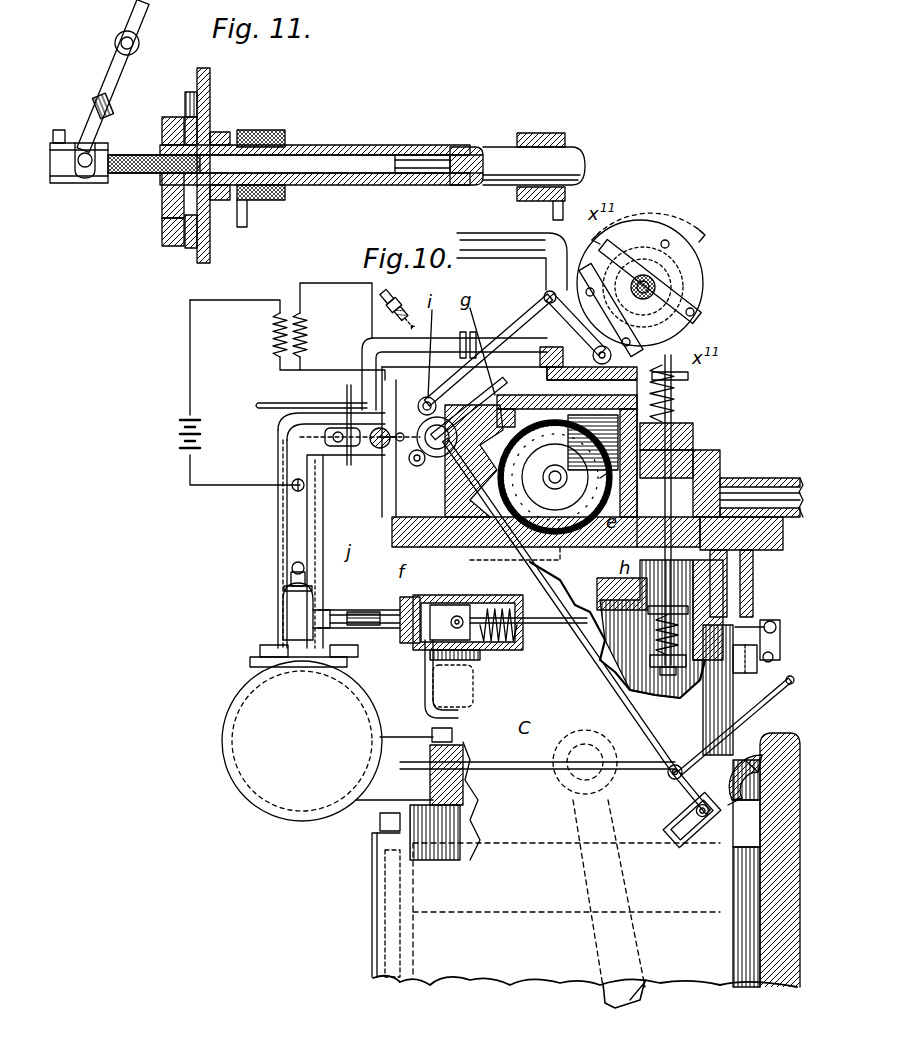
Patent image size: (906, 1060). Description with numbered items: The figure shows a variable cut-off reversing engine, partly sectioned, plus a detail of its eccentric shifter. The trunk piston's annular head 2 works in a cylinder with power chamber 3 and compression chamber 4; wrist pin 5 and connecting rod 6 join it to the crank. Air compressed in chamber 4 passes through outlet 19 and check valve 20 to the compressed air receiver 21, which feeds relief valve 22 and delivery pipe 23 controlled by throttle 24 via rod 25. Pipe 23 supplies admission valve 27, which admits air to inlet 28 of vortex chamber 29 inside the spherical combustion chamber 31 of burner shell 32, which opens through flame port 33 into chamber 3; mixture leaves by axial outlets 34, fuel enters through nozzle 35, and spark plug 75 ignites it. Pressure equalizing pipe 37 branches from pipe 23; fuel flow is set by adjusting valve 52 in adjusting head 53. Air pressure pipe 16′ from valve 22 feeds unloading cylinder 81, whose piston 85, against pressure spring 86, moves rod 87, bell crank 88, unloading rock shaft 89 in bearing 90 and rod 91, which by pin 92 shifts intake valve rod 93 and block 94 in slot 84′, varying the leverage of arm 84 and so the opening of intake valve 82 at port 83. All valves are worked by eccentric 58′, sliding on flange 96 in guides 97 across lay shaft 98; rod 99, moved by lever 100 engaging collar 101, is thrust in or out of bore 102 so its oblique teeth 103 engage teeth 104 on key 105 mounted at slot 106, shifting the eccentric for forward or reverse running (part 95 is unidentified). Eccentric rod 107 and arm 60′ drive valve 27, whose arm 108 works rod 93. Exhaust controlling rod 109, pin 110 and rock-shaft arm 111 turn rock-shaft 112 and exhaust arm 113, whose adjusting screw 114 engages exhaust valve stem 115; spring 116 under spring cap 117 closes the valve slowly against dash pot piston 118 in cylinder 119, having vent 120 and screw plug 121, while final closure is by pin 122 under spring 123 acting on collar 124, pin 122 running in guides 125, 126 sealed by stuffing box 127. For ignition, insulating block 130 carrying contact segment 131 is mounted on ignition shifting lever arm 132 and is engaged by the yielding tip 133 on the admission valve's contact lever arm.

In FIG. 10, the annular head 2 is at (452, 848).
In FIG. 10, the power chamber 3 is at (545, 522).
In FIG. 10, the compression chamber 4 is at (762, 823).
In FIG. 10, the wrist pin 5 is at (556, 786).
In FIG. 10, the connecting rod 6 is at (608, 1000).
In FIG. 10, the air pressure pipe 16′ is at (370, 615).
In FIG. 10, the compressed air outlet 19 is at (462, 825).
In FIG. 10, the check valve 20 is at (430, 795).
In FIG. 10, the compressed air receiver 21 is at (302, 741).
In FIG. 10, the relief valve 22 is at (285, 604).
In FIG. 10, the compressed air delivery pipe 23 is at (278, 512).
In FIG. 10, the throttle 24 is at (300, 440).
In FIG. 10, the rod 25 is at (290, 404).
In FIG. 10, the admission valve 27 is at (396, 528).
In FIG. 10, the inlet 28 is at (455, 500).
In FIG. 10, the vortex chamber 29 is at (504, 572).
In FIG. 10, the spherical combustion chamber 31 is at (600, 478).
In FIG. 10, the burner shell 32 is at (449, 548).
In FIG. 10, the flame port 33 is at (600, 542).
In FIG. 10, the axial outlets 34 is at (575, 537).
In FIG. 10, the fuel nozzle 35 is at (549, 475).
In FIG. 10, the pressure equalizing air pipe 37 is at (380, 340).
In FIG. 10, the adjusting valve 52 is at (488, 245).
In FIG. 10, the adjusting head 53 is at (547, 350).
In FIG. 11, the eccentric 58′ is at (200, 130).
In FIG. 10, the eccentric 58′ is at (698, 318).
In FIG. 10, the arm 60′ is at (411, 383).
In FIG. 10, the spark plug 75 is at (397, 302).
In FIG. 10, the unloading cylinder 81 is at (410, 605).
In FIG. 10, the intake valve 82 is at (766, 770).
In FIG. 10, the intake port 83 is at (762, 795).
In FIG. 10, the integral arm 84 is at (670, 830).
In FIG. 10, the slot 84′ is at (682, 846).
In FIG. 10, the piston 85 is at (418, 648).
In FIG. 10, the pressure spring 86 is at (496, 648).
In FIG. 10, the rod 87 is at (540, 627).
In FIG. 10, the bell crank 88 is at (781, 640).
In FIG. 10, the unloading rock shaft 89 is at (774, 659).
In FIG. 10, the bearing 90 is at (756, 668).
In FIG. 10, the rod 91 is at (762, 705).
In FIG. 10, the pin 92 is at (667, 777).
In FIG. 10, the intake valve rod 93 is at (615, 705).
In FIG. 10, the block 94 is at (690, 815).
In FIG. 11, the disc 95 is at (178, 248).
In FIG. 10, the disc 95 is at (662, 280).
In FIG. 11, the flange 96 is at (206, 96).
In FIG. 10, the flange 96 is at (643, 236).
In FIG. 11, the guides 97 is at (190, 92).
In FIG. 10, the guides 97 is at (597, 255).
In FIG. 11, the lay shaft 98 is at (497, 158).
In FIG. 10, the lay shaft 98 is at (656, 275).
In FIG. 11, the rod 99 is at (340, 158).
In FIG. 10, the rod 99 is at (657, 290).
In FIG. 11, the lever 100 is at (107, 97).
In FIG. 11, the collar 101 is at (84, 182).
In FIG. 11, the bore 102 is at (418, 158).
In FIG. 11, the oblique teeth 103 is at (125, 178).
In FIG. 10, the oblique teeth 103 is at (658, 283).
In FIG. 11, the teeth 104 is at (165, 196).
In FIG. 10, the teeth 104 is at (668, 303).
In FIG. 11, the key 105 is at (156, 223).
In FIG. 10, the key 105 is at (649, 300).
In FIG. 11, the slot 106 is at (197, 205).
In FIG. 10, the slot 106 is at (662, 296).
In FIG. 10, the eccentric rod 107 is at (452, 343).
In FIG. 10, the arm 108 is at (420, 470).
In FIG. 10, the exhaust controlling rod 109 is at (500, 346).
In FIG. 10, the pin 110 is at (548, 296).
In FIG. 10, the rock-shaft arm 111 is at (598, 352).
In FIG. 10, the rock-shaft 112 is at (570, 386).
In FIG. 10, the exhaust arm 113 is at (688, 337).
In FIG. 10, the adjusting screw 114 is at (690, 368).
In FIG. 10, the exhaust valve stem 115 is at (680, 412).
In FIG. 10, the spring 116 is at (684, 402).
In FIG. 10, the spring cap 117 is at (686, 379).
In FIG. 10, the dash pot piston 118 is at (694, 452).
In FIG. 10, the cylinder 119 is at (682, 487).
In FIG. 10, the vent 120 is at (712, 463).
In FIG. 10, the screw plug 121 is at (694, 430).
In FIG. 10, the pin 122 is at (690, 555).
In FIG. 10, the spring 123 is at (650, 641).
In FIG. 10, the collar 124 is at (700, 620).
In FIG. 10, the guide 125 is at (652, 672).
In FIG. 10, the guide 126 is at (655, 605).
In FIG. 10, the stuffing box 127 is at (722, 590).
In FIG. 10, the insulating block 130 is at (335, 436).
In FIG. 10, the contact segment 131 is at (387, 436).
In FIG. 10, the ignition shifting lever arm 132 is at (292, 483).
In FIG. 10, the yielding tip 133 is at (409, 457).